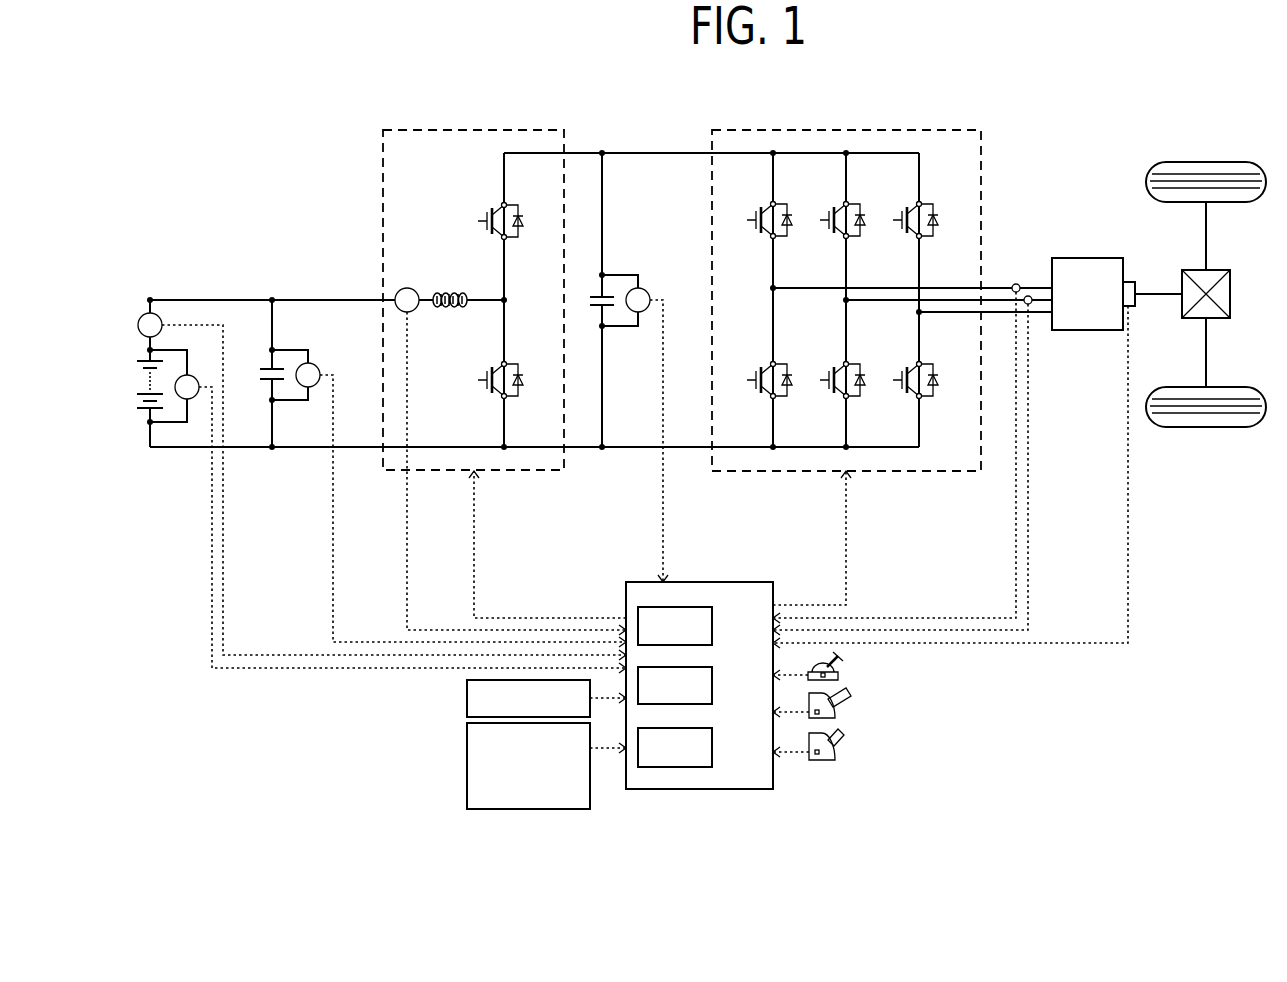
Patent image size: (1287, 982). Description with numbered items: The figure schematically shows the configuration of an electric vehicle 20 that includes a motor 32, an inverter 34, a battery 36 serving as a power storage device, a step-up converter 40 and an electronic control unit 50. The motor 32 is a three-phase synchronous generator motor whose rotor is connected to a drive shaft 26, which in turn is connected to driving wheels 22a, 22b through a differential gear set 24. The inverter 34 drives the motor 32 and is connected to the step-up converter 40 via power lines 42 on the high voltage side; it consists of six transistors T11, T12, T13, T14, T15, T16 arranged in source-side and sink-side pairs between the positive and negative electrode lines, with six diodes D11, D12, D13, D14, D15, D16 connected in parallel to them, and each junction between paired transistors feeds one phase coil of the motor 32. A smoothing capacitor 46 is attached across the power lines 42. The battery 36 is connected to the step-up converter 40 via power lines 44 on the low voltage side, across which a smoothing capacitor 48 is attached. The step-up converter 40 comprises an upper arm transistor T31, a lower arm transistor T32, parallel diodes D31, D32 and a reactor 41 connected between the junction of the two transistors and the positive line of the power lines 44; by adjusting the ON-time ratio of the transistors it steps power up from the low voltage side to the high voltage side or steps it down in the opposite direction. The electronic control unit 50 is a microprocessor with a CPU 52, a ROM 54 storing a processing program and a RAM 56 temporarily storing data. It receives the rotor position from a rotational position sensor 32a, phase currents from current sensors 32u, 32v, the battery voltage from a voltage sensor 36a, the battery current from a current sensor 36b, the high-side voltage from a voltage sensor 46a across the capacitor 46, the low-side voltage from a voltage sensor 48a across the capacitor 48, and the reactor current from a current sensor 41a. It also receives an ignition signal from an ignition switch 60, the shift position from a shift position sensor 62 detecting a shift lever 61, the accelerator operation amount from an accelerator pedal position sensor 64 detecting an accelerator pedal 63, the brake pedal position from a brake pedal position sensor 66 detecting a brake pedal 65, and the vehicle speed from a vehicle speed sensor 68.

The electric vehicle 20 is at (1130, 100).
The driving wheel 22a is at (1207, 162).
The driving wheel 22b is at (1207, 428).
The differential gear set 24 is at (1216, 270).
The drive shaft 26 is at (1157, 292).
The motor 32 is at (1085, 258).
The rotational position sensor 32a is at (1129, 282).
The current sensor 32u is at (1015, 283).
The current sensor 32v is at (1029, 295).
The inverter 34 is at (845, 130).
The battery 36 is at (147, 421).
The voltage sensor 36a is at (190, 375).
The current sensor 36b is at (146, 314).
The step-up converter 40 is at (505, 130).
The reactor 41 is at (449, 293).
The current sensor 41a is at (408, 288).
The power lines on high voltage side 42 is at (698, 165).
The power lines on low voltage side 44 is at (367, 306).
The smoothing capacitor 46 is at (592, 294).
The voltage sensor 46a is at (642, 289).
The smoothing capacitor 48 is at (268, 362).
The voltage sensor 48a is at (311, 362).
The electronic control unit 50 is at (698, 582).
The CPU 52 is at (712, 627).
The ROM 54 is at (712, 687).
The RAM 56 is at (712, 748).
The ignition switch 60 is at (467, 698).
The shift lever 61 is at (845, 660).
The shift position sensor 62 is at (840, 677).
The accelerator pedal 63 is at (850, 697).
The accelerator pedal position sensor 64 is at (836, 714).
The brake pedal 65 is at (845, 737).
The brake pedal position sensor 66 is at (836, 756).
The vehicle speed sensor 68 is at (467, 748).
The transistor T11 is at (758, 210).
The transistor T12 is at (831, 210).
The transistor T13 is at (904, 210).
The transistor T14 is at (758, 370).
The transistor T15 is at (831, 370).
The transistor T16 is at (904, 370).
The diode D11 is at (792, 239).
The diode D12 is at (865, 239).
The diode D13 is at (938, 239).
The diode D14 is at (792, 399).
The diode D15 is at (865, 399).
The diode D16 is at (938, 399).
The transistor T31 is at (489, 211).
The transistor T32 is at (489, 370).
The diode D31 is at (523, 240).
The diode D32 is at (523, 399).